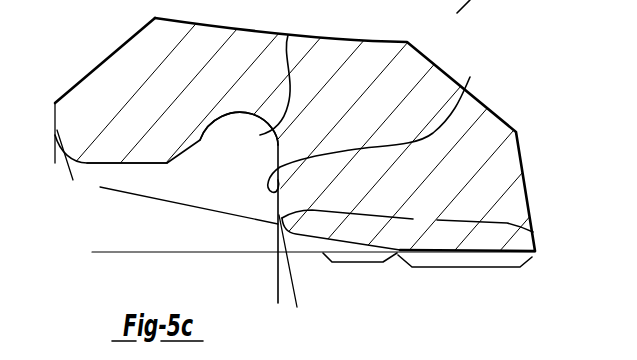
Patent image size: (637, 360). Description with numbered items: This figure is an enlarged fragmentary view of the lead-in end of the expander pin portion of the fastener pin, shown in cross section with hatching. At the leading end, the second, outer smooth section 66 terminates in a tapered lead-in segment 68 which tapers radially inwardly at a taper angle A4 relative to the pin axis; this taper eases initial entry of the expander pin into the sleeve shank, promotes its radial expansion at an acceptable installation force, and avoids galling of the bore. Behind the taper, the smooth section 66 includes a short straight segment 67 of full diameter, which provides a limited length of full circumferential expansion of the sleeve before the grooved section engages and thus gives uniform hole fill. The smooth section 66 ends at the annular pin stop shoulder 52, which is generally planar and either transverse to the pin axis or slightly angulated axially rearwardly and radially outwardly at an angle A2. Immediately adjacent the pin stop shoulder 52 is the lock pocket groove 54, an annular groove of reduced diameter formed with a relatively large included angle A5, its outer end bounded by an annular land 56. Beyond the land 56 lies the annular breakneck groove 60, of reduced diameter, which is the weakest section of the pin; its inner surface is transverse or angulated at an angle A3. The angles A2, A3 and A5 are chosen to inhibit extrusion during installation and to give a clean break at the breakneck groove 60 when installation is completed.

The pin stop shoulder 52 is at (375, 121).
The lock pocket groove 54 is at (289, 33).
The annular land 56 is at (110, 163).
The breakneck groove 60 is at (55, 103).
The second, outer smooth section 66 is at (407, 228).
The straight segment 67 is at (468, 267).
The tapered lead-in segment 68 is at (340, 262).
The angle A2 is at (325, 276).
The angle A3 is at (107, 115).
The taper angle A4 is at (115, 203).
The included angle A5 is at (269, 165).